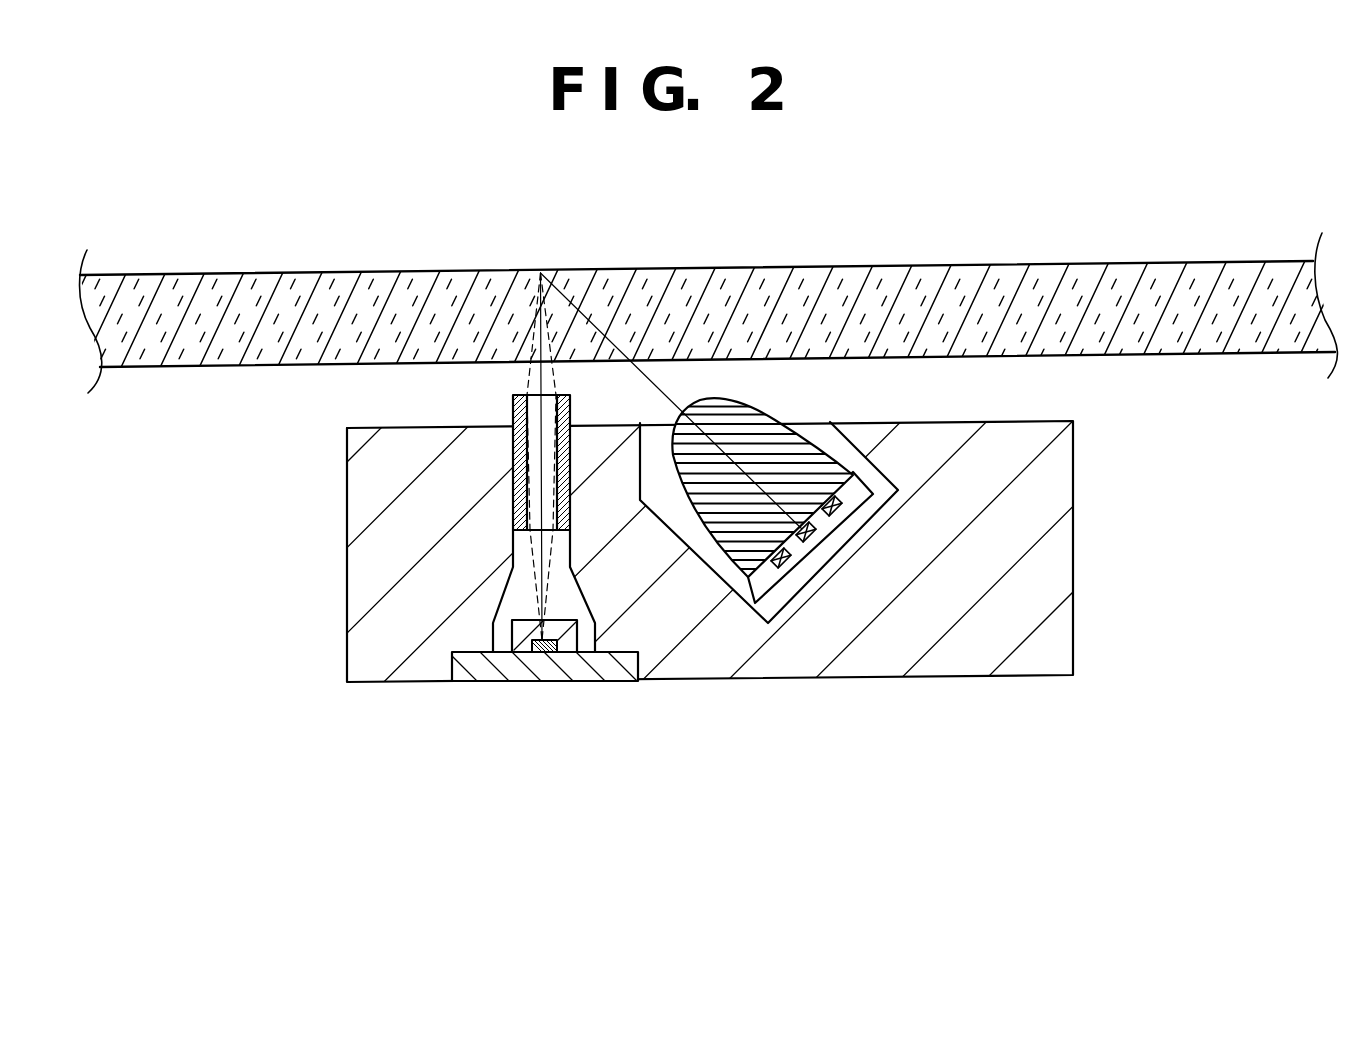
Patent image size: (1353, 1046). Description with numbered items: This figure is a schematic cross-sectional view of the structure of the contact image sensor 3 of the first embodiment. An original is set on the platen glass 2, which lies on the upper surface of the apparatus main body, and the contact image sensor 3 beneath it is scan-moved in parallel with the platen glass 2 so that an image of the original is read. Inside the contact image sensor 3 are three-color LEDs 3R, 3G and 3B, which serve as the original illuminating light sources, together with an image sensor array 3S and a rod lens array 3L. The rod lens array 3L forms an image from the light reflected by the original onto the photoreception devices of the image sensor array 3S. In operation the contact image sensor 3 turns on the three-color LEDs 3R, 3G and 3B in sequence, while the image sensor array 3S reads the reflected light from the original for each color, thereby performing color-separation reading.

The platen glass 2 is at (908, 296).
The contact image sensor 3 is at (1073, 549).
The rod lens array 3L is at (515, 496).
The image sensor array 3S is at (544, 652).
The red LED 3R is at (785, 568).
The green LED 3G is at (812, 540).
The blue LED 3B is at (840, 509).